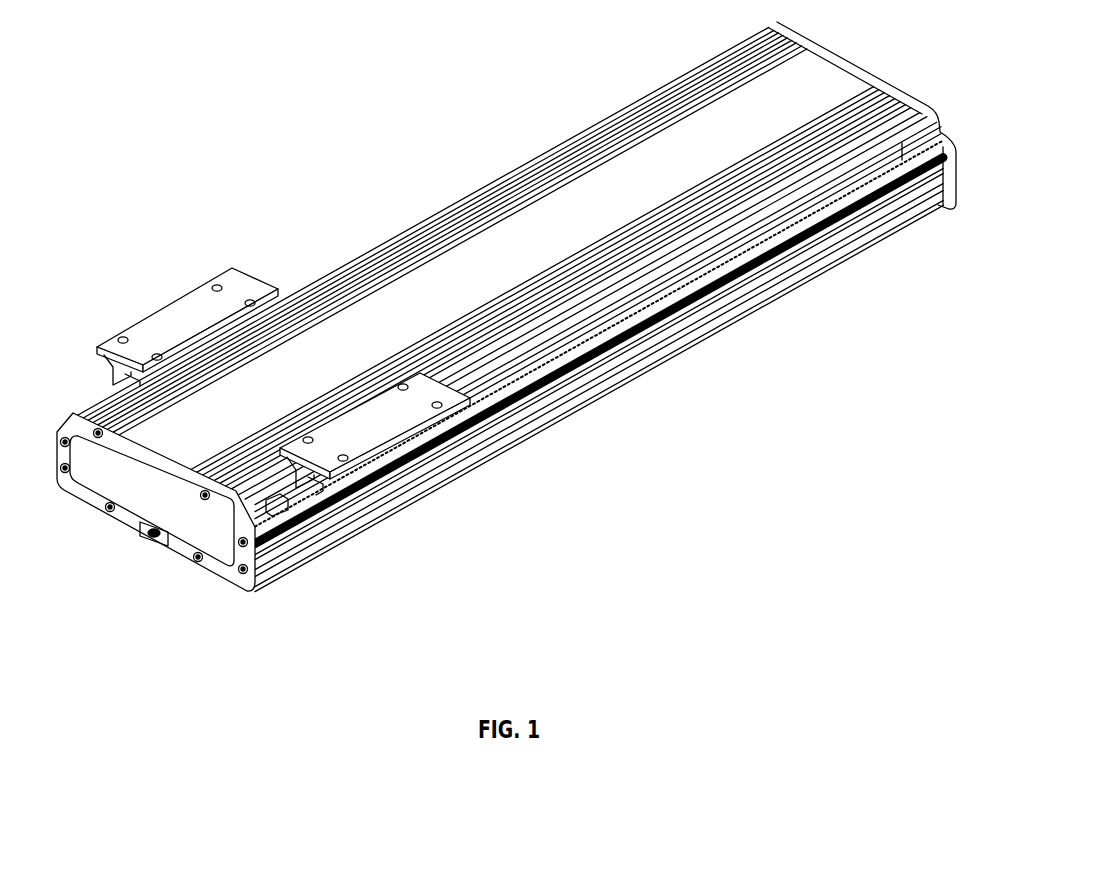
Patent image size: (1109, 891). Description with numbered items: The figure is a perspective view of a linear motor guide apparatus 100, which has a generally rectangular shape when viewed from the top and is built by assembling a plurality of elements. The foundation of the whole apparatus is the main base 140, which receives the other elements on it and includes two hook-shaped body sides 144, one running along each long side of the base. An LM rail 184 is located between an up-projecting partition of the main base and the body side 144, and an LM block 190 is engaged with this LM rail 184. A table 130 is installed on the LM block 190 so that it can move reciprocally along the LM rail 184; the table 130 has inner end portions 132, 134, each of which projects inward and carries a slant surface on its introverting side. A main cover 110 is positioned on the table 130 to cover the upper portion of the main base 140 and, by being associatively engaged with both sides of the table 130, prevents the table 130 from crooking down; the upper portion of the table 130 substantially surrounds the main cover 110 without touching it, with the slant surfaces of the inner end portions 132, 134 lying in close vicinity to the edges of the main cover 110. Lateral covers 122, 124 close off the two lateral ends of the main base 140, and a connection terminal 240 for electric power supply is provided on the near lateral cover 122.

The linear motor guide apparatus 100 is at (506, 316).
The main cover 110 is at (511, 309).
The lateral cover 122 is at (156, 502).
The lateral cover 124 is at (847, 53).
The table 130 is at (292, 363).
The inner end portion 132 is at (163, 323).
The inner end portion 134 is at (387, 420).
The main base 140 is at (596, 415).
The body side 144 is at (627, 352).
The LM rail 184 is at (270, 505).
The LM block 190 is at (297, 498).
The connection terminal 240 is at (158, 537).